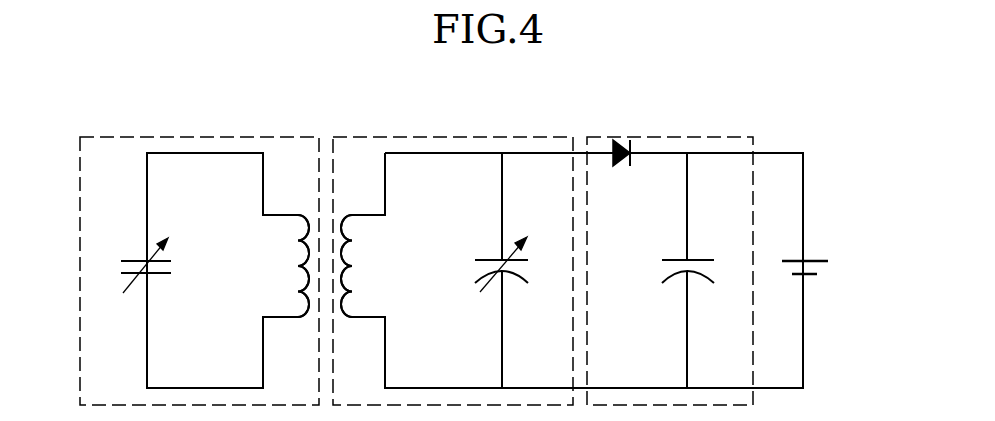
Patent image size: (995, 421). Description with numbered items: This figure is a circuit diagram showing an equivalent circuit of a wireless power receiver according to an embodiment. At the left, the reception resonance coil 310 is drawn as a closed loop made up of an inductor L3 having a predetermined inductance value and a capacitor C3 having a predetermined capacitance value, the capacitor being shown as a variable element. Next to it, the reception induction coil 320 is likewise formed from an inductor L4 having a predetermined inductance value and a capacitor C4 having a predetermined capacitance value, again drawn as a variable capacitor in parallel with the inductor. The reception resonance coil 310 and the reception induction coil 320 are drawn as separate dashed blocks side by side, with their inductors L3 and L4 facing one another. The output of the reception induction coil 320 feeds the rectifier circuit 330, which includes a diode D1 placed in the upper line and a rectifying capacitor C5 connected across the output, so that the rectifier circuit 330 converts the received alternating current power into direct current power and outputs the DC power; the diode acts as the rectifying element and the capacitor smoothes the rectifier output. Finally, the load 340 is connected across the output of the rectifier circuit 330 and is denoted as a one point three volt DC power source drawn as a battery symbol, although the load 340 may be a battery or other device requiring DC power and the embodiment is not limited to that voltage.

The reception resonance coil 310 is at (231, 137).
The reception induction coil 320 is at (476, 137).
The rectifier circuit 330 is at (688, 137).
The load 340 is at (815, 259).
The capacitor C3 is at (131, 265).
The inductor L3 is at (285, 266).
The inductor L4 is at (367, 266).
The capacitor C4 is at (517, 270).
The diode D1 is at (621, 135).
The rectifying capacitor C5 is at (703, 270).